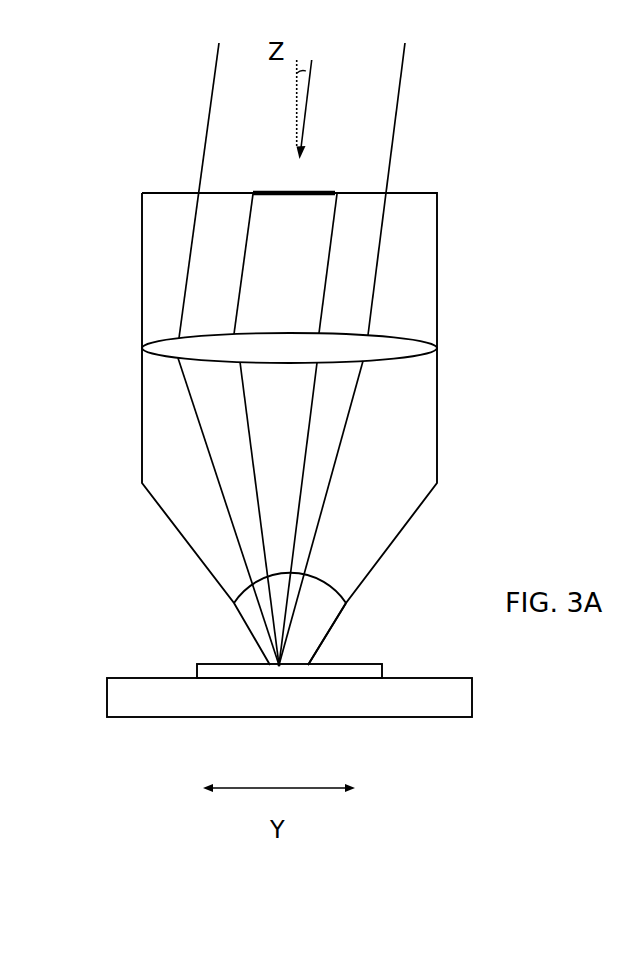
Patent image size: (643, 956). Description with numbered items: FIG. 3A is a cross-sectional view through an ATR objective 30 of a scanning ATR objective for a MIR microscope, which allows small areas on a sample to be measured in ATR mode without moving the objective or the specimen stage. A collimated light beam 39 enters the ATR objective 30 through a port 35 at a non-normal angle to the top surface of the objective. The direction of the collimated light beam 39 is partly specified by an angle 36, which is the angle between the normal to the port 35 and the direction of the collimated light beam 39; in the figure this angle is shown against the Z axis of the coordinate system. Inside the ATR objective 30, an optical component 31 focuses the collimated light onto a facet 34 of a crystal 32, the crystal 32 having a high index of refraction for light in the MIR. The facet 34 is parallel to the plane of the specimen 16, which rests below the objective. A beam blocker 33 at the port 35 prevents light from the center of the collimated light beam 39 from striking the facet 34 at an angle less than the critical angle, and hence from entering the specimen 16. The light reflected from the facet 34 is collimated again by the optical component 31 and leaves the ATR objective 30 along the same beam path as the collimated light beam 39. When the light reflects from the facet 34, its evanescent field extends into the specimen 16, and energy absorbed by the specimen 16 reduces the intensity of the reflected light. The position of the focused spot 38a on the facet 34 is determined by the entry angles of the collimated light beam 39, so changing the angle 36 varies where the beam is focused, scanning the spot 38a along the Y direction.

The specimen 16 is at (220, 670).
The ATR objective 30 is at (142, 445).
The optical component 31 is at (423, 342).
The crystal 32 is at (233, 603).
The beam blocker 33 is at (280, 191).
The facet 34 is at (305, 665).
The port 35 is at (167, 193).
The angle 36 is at (299, 64).
The spot 38a is at (279, 665).
The collimated light beam 39 is at (368, 145).